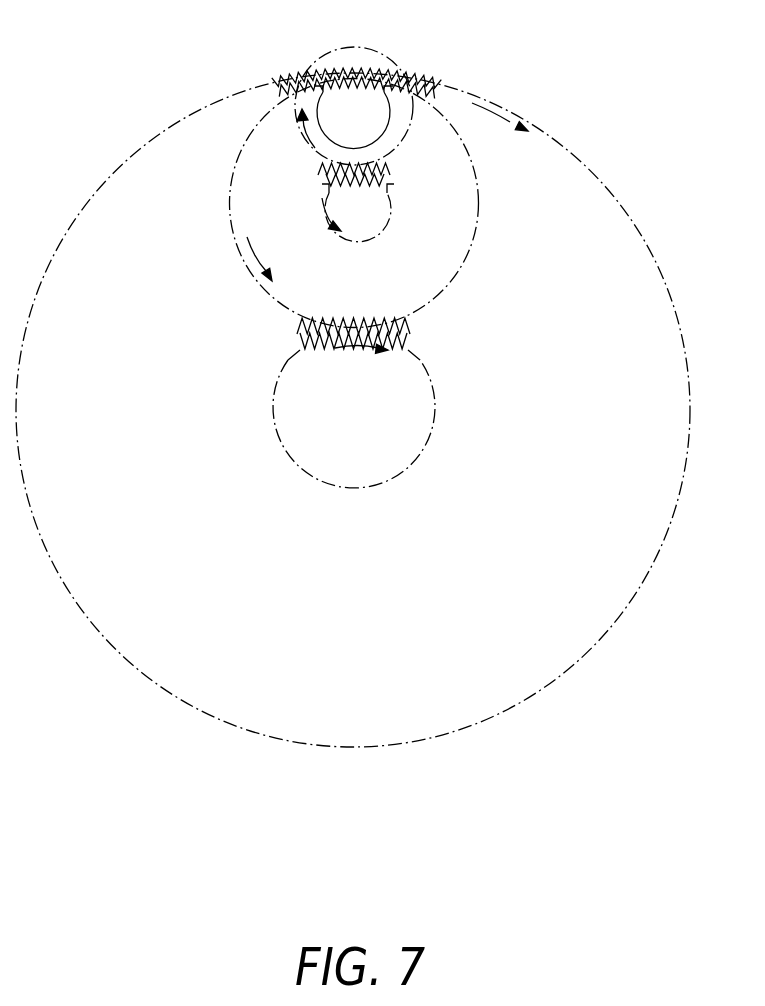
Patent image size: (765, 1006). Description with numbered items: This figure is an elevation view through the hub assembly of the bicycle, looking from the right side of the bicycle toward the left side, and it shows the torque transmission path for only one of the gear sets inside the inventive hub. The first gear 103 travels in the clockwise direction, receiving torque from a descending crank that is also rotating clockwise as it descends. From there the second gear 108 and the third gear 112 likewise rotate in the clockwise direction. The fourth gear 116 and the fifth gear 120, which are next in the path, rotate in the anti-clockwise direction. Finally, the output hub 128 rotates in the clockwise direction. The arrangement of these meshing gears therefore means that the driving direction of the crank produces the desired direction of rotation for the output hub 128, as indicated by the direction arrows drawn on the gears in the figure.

The first gear 103 is at (395, 88).
The second gear 108 is at (330, 90).
The third gear 112 is at (322, 166).
The fourth gear 116 is at (328, 184).
The fifth gear 120 is at (412, 318).
The output hub 128 is at (410, 348).